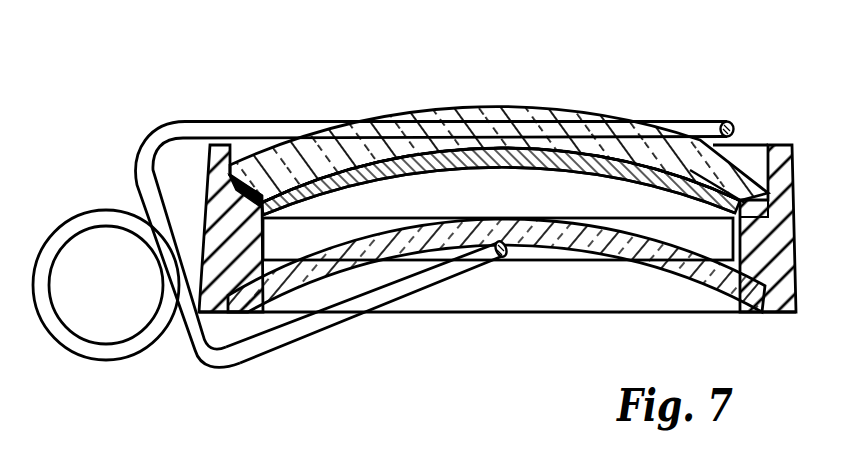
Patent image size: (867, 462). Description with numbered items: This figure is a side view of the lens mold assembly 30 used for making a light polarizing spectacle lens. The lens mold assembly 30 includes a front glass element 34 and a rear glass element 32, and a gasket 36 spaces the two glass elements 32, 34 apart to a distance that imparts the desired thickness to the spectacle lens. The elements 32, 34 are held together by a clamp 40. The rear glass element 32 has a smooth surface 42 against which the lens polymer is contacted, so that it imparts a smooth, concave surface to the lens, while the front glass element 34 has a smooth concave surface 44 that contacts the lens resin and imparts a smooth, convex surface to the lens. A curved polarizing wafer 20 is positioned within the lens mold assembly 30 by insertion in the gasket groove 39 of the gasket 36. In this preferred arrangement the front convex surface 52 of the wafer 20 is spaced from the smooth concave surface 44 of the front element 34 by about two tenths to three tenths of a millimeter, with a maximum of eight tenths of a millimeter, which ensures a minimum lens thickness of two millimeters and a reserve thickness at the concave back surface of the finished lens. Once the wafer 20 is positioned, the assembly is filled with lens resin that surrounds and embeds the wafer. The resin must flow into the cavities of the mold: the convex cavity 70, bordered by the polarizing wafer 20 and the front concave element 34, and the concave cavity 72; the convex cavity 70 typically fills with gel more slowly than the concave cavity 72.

The polarizing wafer 20 is at (498, 239).
The lens mold assembly 30 is at (475, 136).
The rear glass element 32 is at (275, 277).
The front glass element 34 is at (281, 157).
The gasket 36 is at (212, 198).
The gasket groove 39 is at (230, 180).
The clamp 40 is at (212, 359).
The smooth surface 42 is at (360, 240).
The smooth concave surface 44 is at (400, 147).
The front convex surface 52 is at (331, 178).
The convex cavity 70 is at (522, 145).
The concave cavity 72 is at (514, 203).